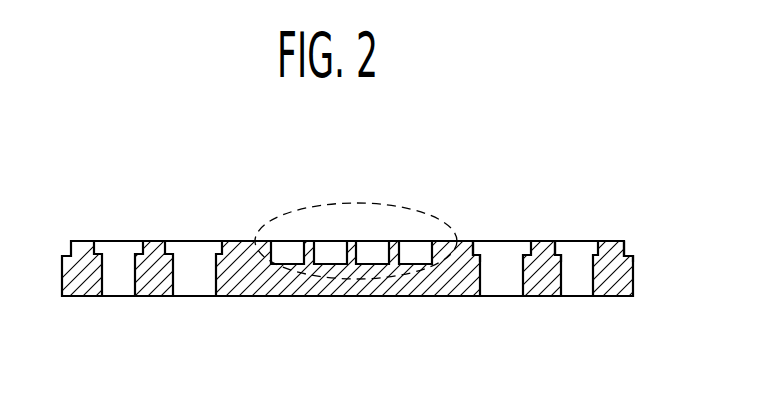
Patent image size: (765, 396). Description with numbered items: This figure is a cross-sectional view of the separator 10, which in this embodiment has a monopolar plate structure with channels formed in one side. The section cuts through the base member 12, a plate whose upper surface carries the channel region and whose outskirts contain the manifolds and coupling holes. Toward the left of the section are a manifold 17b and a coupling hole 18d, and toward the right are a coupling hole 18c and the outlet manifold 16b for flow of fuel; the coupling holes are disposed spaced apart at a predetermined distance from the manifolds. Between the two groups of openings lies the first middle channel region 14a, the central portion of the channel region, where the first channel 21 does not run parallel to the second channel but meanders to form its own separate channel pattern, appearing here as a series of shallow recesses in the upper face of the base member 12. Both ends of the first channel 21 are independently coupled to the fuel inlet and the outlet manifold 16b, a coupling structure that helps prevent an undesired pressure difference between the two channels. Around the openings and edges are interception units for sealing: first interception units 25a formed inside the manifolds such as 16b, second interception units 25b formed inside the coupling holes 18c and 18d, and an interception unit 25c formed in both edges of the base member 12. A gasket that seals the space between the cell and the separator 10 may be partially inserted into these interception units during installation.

The separator 10 is at (85, 182).
The base member 12 is at (633, 270).
The first middle channel region 14a is at (353, 202).
The first channel 21 is at (415, 247).
The first interception unit 25a is at (559, 250).
The second interception unit 25b is at (480, 250).
The interception unit 25c is at (627, 250).
The manifold 17b is at (122, 288).
The coupling hole 18d is at (198, 288).
The coupling hole 18c is at (500, 288).
The outlet manifold 16b is at (578, 288).